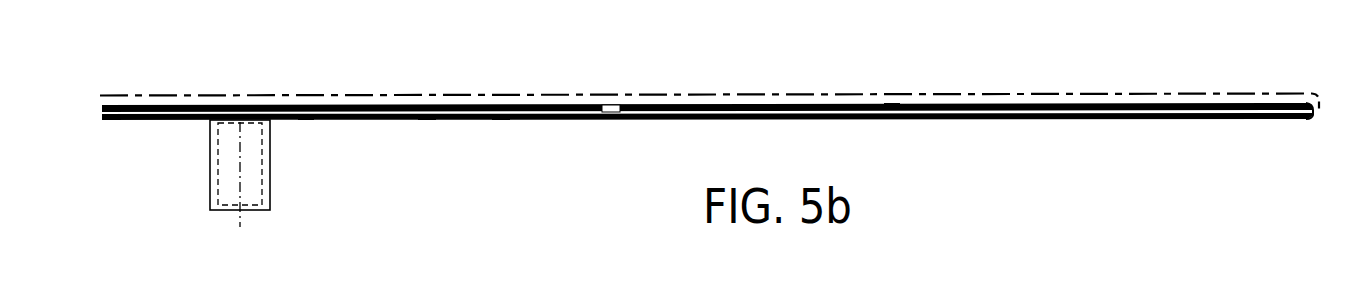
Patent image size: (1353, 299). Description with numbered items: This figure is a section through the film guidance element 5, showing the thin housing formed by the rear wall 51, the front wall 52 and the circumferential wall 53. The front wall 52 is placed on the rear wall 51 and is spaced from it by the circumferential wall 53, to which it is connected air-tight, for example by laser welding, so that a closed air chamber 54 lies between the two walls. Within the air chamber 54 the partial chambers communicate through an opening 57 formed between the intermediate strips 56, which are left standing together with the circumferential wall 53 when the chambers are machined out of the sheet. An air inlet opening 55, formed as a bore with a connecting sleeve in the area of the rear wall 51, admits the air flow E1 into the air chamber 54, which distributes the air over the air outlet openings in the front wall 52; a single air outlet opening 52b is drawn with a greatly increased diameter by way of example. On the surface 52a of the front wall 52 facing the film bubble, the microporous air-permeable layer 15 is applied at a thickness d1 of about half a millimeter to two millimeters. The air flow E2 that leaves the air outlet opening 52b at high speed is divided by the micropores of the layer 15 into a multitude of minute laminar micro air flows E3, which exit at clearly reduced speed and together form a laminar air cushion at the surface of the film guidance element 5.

The film guidance element 5 is at (707, 113).
The microporous air-permeable layer 15 is at (970, 97).
The rear wall 51 is at (557, 119).
The front wall 52 is at (758, 108).
The surface of the front wall 52a is at (894, 100).
The air outlet opening 52b is at (622, 107).
The circumferential wall 53 is at (1311, 120).
The air chamber 54 is at (427, 120).
The air inlet opening 55 is at (270, 155).
The intermediate strips 56 is at (500, 120).
The opening 57 is at (306, 119).
The air flow E1 is at (235, 237).
The air flow E2 is at (605, 103).
The micro air flows E3 is at (195, 103).
The thickness d1 is at (1075, 140).